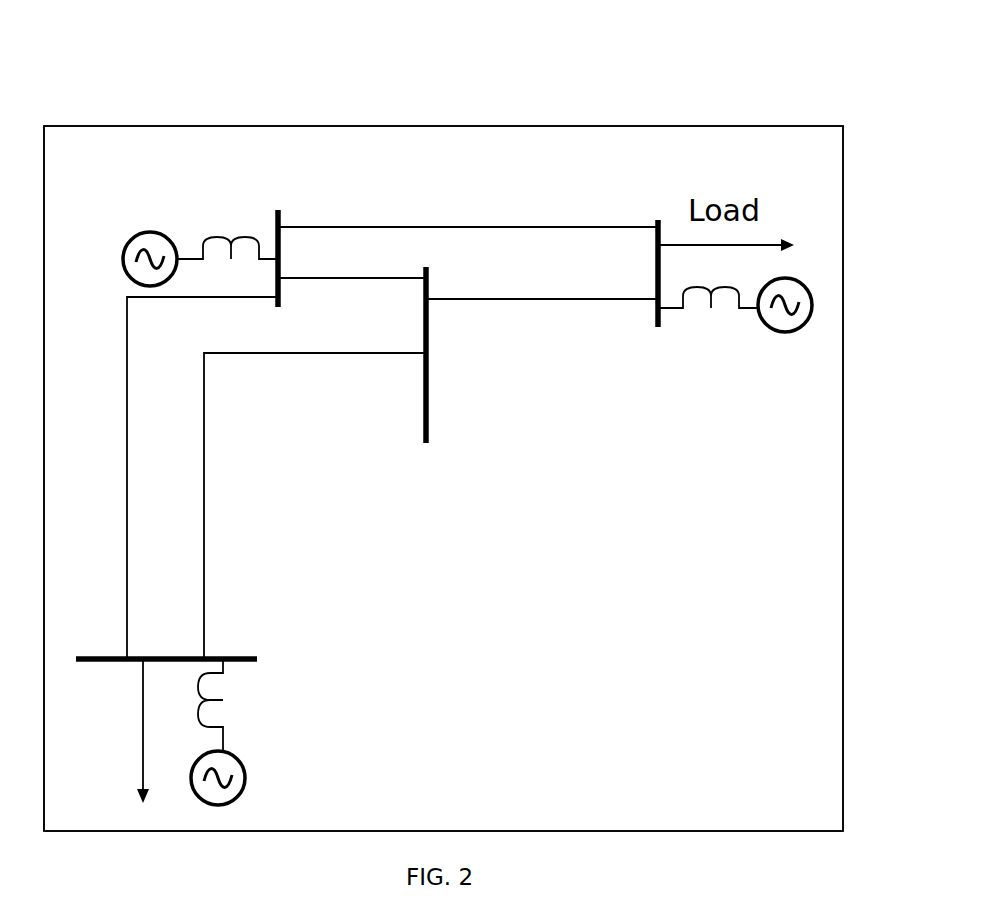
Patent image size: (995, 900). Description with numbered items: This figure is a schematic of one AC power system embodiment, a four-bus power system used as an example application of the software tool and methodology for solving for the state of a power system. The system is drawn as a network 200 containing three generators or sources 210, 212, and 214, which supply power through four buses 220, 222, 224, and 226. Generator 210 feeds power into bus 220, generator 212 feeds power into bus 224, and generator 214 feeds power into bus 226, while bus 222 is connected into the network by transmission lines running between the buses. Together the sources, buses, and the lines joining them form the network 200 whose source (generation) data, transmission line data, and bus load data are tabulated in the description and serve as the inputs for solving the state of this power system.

The network 200 is at (613, 93).
The generator 210 is at (122, 248).
The generator 212 is at (797, 333).
The generator 214 is at (246, 789).
The bus 220 is at (277, 308).
The bus 222 is at (428, 443).
The bus 224 is at (656, 270).
The bus 226 is at (224, 659).